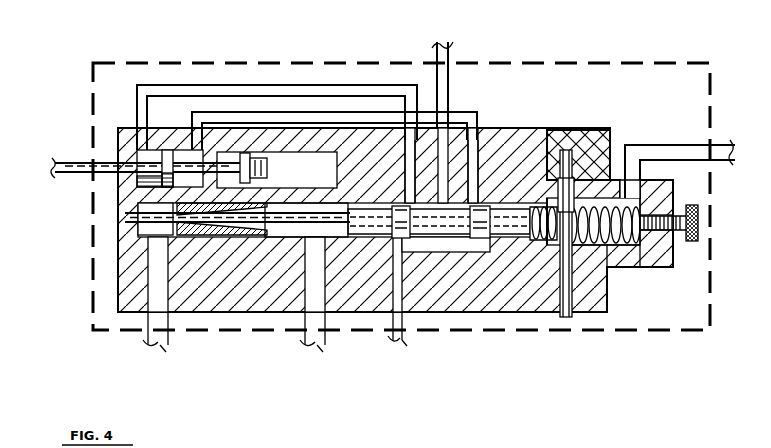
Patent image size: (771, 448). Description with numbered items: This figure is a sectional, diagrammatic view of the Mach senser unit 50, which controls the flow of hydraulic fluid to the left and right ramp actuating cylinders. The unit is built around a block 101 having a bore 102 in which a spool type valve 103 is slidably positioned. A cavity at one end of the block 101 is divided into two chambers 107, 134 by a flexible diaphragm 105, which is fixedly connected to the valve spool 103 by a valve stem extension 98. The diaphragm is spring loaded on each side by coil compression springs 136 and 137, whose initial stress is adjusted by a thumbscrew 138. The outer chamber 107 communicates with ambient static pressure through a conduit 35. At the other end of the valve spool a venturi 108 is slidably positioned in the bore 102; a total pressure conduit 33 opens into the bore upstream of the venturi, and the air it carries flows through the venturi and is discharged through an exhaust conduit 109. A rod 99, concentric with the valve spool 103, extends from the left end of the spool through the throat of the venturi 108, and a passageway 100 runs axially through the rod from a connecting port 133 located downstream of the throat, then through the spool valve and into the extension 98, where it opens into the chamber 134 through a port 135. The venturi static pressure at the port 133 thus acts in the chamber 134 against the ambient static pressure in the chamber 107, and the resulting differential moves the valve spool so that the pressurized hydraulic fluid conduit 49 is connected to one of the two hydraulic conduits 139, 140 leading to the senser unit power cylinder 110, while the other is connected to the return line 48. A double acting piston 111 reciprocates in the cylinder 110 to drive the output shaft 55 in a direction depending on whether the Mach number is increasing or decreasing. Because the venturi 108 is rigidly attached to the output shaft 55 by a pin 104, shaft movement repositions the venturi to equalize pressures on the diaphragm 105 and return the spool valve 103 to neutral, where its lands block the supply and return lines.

The pressure control unit enclosure 50 is at (574, 62).
The block 101 is at (117, 252).
The flexible diaphragm 105 is at (590, 140).
The bore 102 is at (445, 238).
The spool type valve 103 is at (368, 240).
The hydraulic conduit 140 is at (220, 113).
The hydraulic conduit 139 is at (255, 91).
The pressurized hydraulic fluid conduit 49 is at (444, 80).
The output shaft 55 is at (77, 160).
The double acting piston 111 is at (165, 158).
The senser unit power cylinder 110 is at (150, 182).
The pin 104 is at (245, 187).
The rod 99 is at (127, 215).
The passageway 100 is at (325, 207).
The venturi 108 is at (217, 228).
The connecting port 133 is at (220, 222).
The total pressure conduit 33 is at (157, 340).
The exhaust conduit 109 is at (308, 338).
The return line 48 is at (402, 322).
The port 135 is at (540, 242).
The coil compression spring 136 is at (548, 278).
The valve stem extension 98 is at (560, 210).
The chamber 134 is at (558, 285).
The outer chamber 107 is at (573, 285).
The coil compression spring 137 is at (623, 244).
The thumbscrew 138 is at (679, 240).
The conduit 35 is at (675, 155).